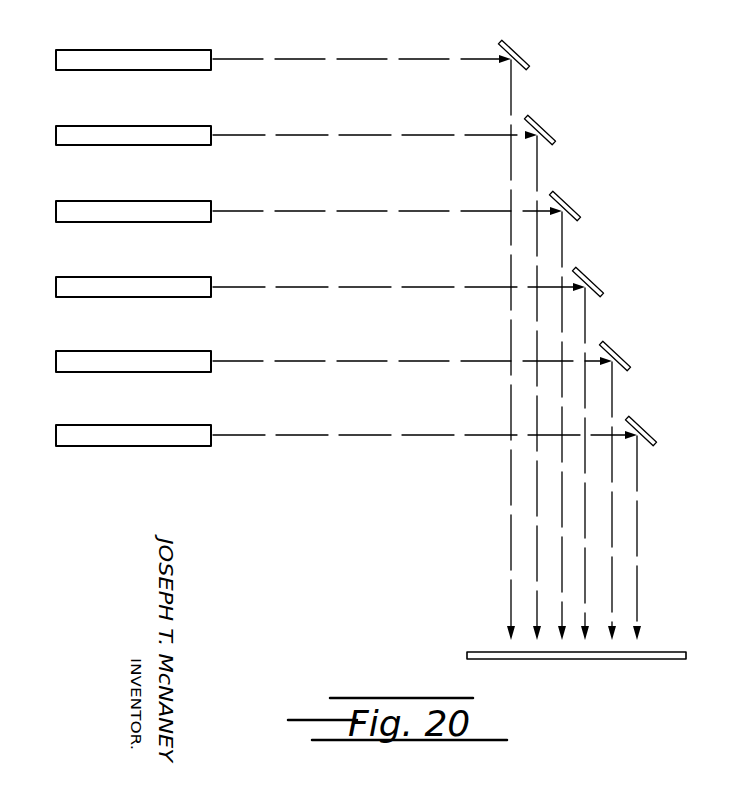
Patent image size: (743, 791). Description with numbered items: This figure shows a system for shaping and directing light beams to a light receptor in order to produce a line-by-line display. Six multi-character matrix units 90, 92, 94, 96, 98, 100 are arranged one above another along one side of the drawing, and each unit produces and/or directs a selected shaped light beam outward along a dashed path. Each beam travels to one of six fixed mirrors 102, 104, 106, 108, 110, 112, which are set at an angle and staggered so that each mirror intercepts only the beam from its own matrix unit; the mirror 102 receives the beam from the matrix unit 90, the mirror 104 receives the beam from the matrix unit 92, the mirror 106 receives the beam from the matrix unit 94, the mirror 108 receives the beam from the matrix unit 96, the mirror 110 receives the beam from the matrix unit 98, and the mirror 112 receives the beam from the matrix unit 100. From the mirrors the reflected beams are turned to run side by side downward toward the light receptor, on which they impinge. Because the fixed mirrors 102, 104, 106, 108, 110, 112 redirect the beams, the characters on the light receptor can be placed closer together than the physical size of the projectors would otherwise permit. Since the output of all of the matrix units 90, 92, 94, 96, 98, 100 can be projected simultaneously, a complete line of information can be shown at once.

The multi-character matrix unit 90 is at (169, 70).
The multi-character matrix unit 92 is at (166, 145).
The multi-character matrix unit 94 is at (154, 223).
The multi-character matrix unit 96 is at (151, 297).
The multi-character matrix unit 98 is at (149, 372).
The multi-character matrix unit 100 is at (151, 446).
The fixed mirror 102 is at (519, 67).
The fixed mirror 104 is at (545, 142).
The fixed mirror 106 is at (569, 218).
The fixed mirror 108 is at (593, 294).
The fixed mirror 110 is at (620, 368).
The fixed mirror 112 is at (646, 443).